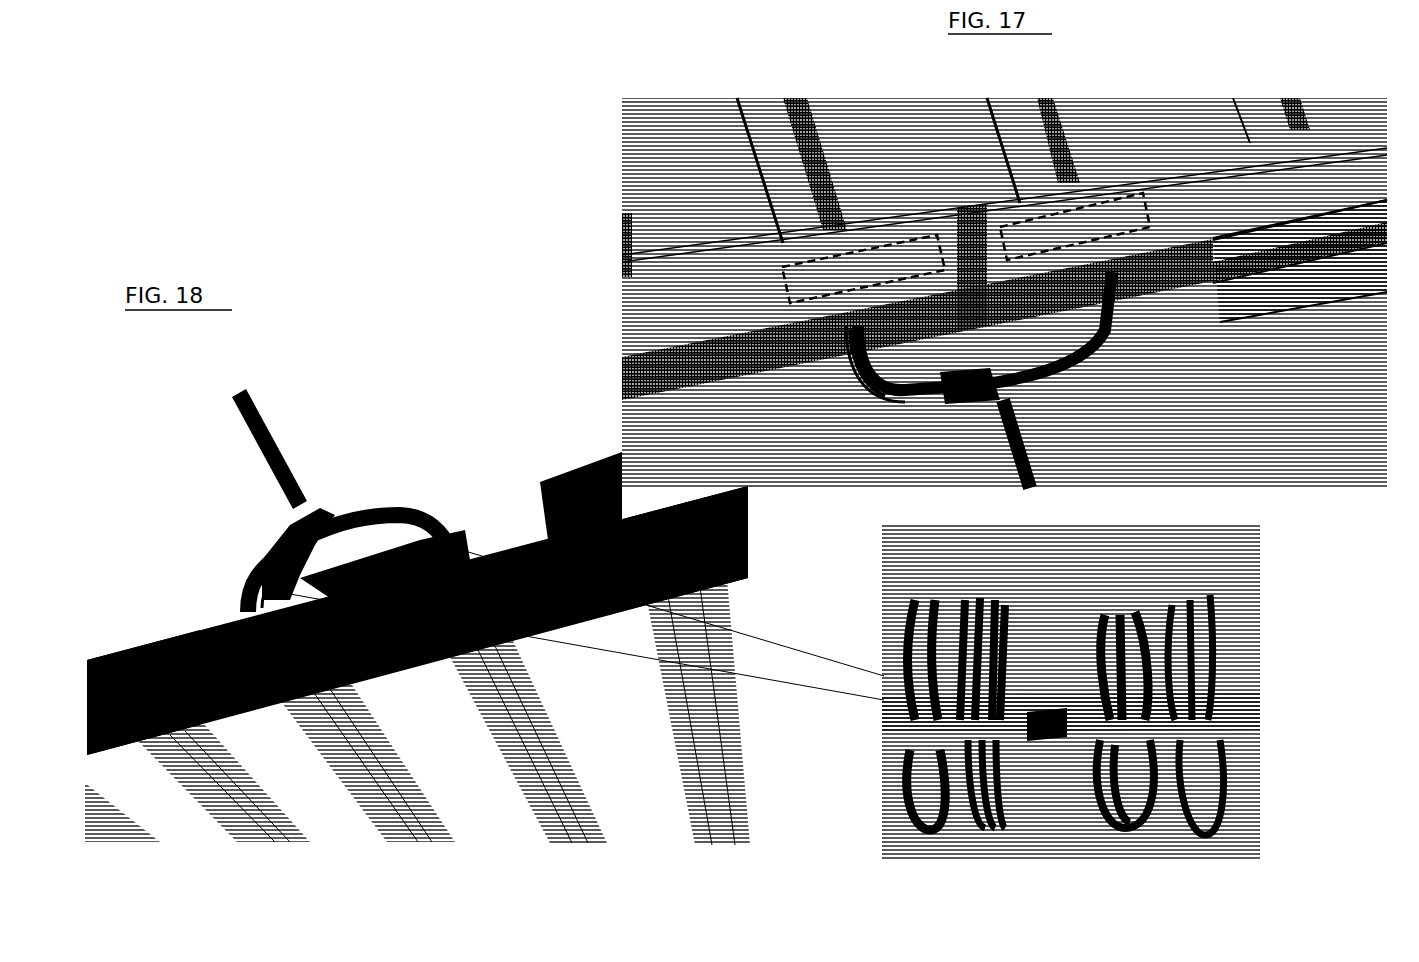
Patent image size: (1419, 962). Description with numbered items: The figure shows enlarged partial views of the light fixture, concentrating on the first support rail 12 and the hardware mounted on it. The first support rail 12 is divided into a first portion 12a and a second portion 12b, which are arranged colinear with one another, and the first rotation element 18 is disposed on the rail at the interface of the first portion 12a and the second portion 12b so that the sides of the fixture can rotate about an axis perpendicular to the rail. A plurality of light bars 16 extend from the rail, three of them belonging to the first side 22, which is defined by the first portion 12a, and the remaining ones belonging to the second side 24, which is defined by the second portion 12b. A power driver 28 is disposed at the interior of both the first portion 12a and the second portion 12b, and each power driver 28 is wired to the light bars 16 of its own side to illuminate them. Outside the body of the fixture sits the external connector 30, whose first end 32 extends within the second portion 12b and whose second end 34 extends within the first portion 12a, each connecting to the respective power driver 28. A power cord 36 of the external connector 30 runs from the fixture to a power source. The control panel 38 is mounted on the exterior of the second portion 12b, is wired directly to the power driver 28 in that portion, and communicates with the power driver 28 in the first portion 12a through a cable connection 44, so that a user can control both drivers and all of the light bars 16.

In FIG. 18, the first support rail 12 is at (178, 648).
In FIG. 17, the first portion of the first support rail 12a is at (690, 329).
In FIG. 18, the first portion of the first support rail 12a is at (97, 657).
In FIG. 17, the second portion of the first support rail 12b is at (1285, 197).
In FIG. 18, the second portion of the first support rail 12b is at (752, 540).
In FIG. 18, the light bar 16 is at (565, 745).
In FIG. 18, the first rotation element 18 is at (390, 680).
In FIG. 18, the first side 22 is at (225, 855).
In FIG. 18, the second side 24 is at (685, 855).
In FIG. 17, the power driver 28 is at (966, 248).
In FIG. 17, the external connector 30 is at (1009, 380).
In FIG. 18, the external connector 30 is at (305, 490).
In FIG. 17, the first end of the external connector 32 is at (1105, 350).
In FIG. 18, the first end of the external connector 32 is at (400, 512).
In FIG. 17, the second end of the external connector 34 is at (886, 400).
In FIG. 18, the second end of the external connector 34 is at (240, 580).
In FIG. 17, the power cord 36 is at (1005, 456).
In FIG. 18, the power cord 36 is at (268, 416).
In FIG. 17, the control panel 38 is at (1300, 308).
In FIG. 18, the control panel 38 is at (562, 468).
In FIG. 17, the cable connection 44 is at (898, 357).
In FIG. 18, the cable connection 44 is at (414, 543).